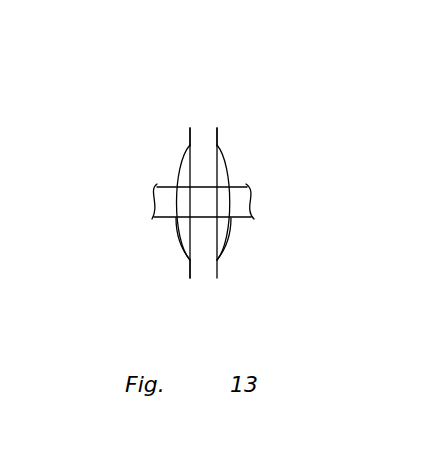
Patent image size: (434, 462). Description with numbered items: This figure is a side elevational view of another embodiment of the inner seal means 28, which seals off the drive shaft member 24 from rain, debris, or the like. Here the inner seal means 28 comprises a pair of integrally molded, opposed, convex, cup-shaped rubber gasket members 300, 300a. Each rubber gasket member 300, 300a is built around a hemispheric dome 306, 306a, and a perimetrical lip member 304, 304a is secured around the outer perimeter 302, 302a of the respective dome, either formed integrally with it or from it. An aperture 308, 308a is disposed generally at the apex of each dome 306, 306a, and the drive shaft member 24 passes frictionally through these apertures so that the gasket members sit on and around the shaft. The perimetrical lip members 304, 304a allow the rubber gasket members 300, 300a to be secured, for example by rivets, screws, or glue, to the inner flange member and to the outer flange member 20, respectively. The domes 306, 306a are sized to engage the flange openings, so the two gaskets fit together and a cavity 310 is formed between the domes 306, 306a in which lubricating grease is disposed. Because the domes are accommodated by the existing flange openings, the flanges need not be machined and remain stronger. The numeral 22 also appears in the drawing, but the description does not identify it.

The drive shaft member 24 is at (243, 203).
The inner seal means 28 is at (146, 271).
The rubber gasket member 300 is at (257, 135).
The rubber gasket member 300a is at (147, 141).
The outer perimeter 302 is at (218, 142).
The outer perimeter 302a is at (189, 143).
The perimetrical lip member 304 is at (217, 128).
The perimetrical lip member 304a is at (191, 128).
The hemispheric dome 306 is at (229, 175).
The hemispheric dome 306a is at (177, 176).
The aperture 308 is at (241, 219).
The aperture 308a is at (175, 218).
The cavity 310 is at (192, 272).
The outer flange member 20 is at (336, 449).
The surface 22 is at (400, 461).